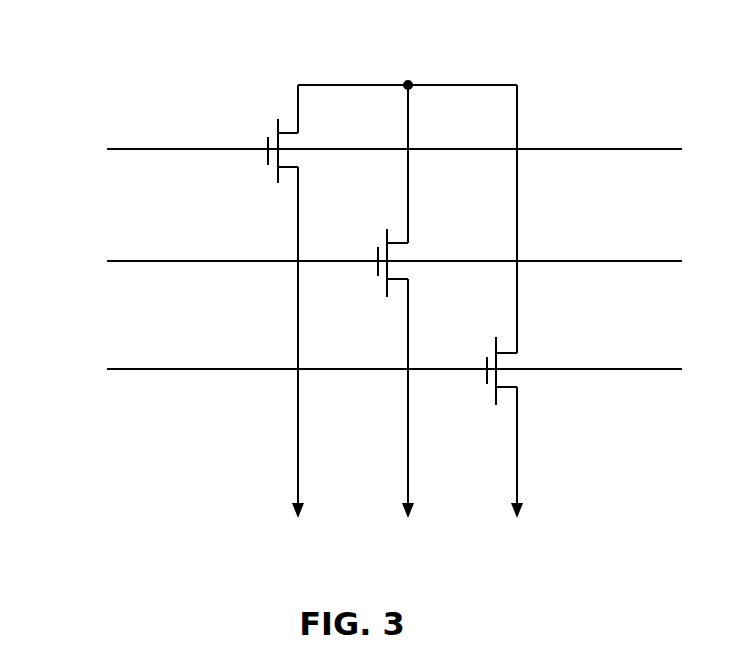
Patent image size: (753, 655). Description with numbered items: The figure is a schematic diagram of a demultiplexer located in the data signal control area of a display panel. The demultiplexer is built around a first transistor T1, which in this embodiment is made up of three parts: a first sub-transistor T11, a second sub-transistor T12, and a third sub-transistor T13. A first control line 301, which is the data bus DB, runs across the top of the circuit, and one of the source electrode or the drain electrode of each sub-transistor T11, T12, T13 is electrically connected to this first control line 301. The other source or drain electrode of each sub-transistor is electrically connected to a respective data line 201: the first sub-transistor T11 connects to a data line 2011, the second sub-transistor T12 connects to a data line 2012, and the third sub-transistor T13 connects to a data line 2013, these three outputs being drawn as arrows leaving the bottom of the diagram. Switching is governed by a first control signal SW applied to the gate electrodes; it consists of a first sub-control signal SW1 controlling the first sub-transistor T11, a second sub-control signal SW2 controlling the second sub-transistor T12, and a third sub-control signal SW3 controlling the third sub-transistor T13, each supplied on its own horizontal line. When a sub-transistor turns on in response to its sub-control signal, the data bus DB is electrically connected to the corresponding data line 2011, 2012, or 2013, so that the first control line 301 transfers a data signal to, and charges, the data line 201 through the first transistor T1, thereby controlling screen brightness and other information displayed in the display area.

The first control line 301 is at (408, 85).
The data line 201 is at (408, 374).
The data line 2011 is at (299, 374).
The data line 2012 is at (408, 430).
The data line 2013 is at (517, 484).
The first transistor T1 is at (414, 262).
The first sub-transistor T11 is at (312, 151).
The second sub-transistor T12 is at (415, 263).
The third sub-transistor T13 is at (523, 371).
The first control signal SW is at (362, 262).
The first sub-control signal SW1 is at (362, 152).
The second sub-control signal SW2 is at (363, 264).
The third sub-control signal SW3 is at (363, 372).